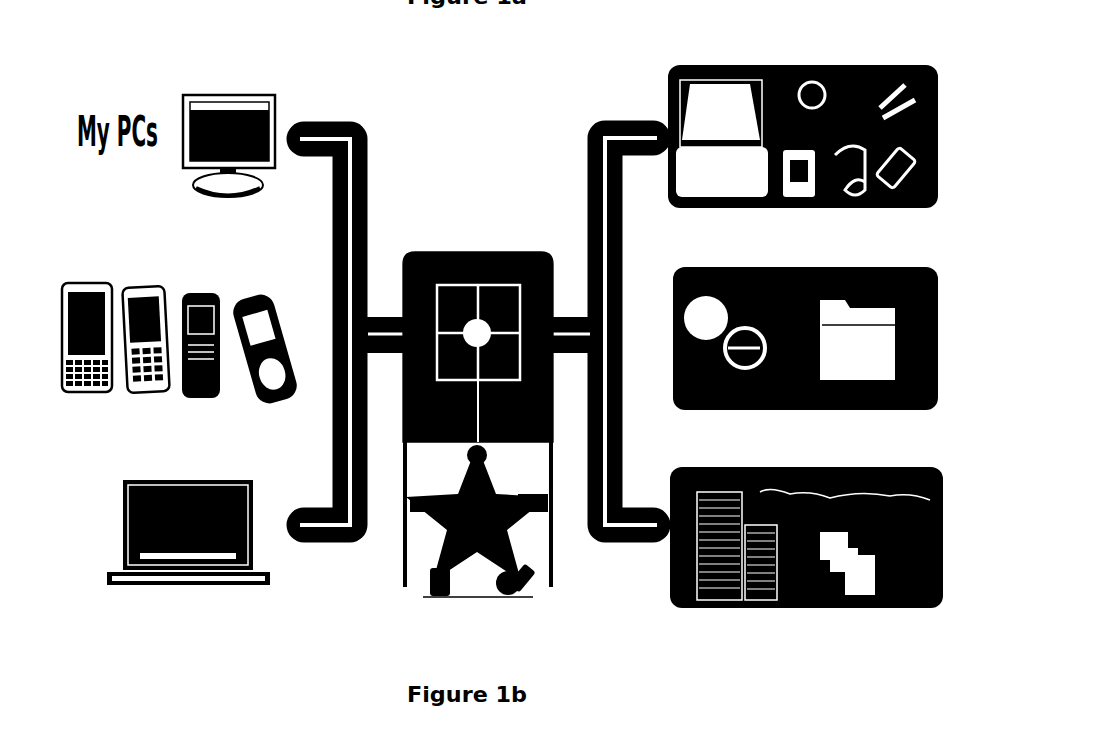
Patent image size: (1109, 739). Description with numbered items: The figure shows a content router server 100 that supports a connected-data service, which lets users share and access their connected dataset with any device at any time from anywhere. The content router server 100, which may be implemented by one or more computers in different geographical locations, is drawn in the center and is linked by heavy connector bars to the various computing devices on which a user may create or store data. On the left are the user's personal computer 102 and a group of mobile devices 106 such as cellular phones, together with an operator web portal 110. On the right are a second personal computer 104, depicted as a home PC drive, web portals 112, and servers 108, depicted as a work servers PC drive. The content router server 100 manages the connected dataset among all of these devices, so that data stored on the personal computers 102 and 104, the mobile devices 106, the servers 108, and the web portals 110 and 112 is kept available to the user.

The content router server 100 is at (433, 252).
The personal computer 102 is at (195, 95).
The personal computer 104 is at (838, 63).
The mobile devices 106 is at (145, 275).
The servers 108 is at (720, 610).
The web portal 110 is at (162, 587).
The web portal 112 is at (822, 268).